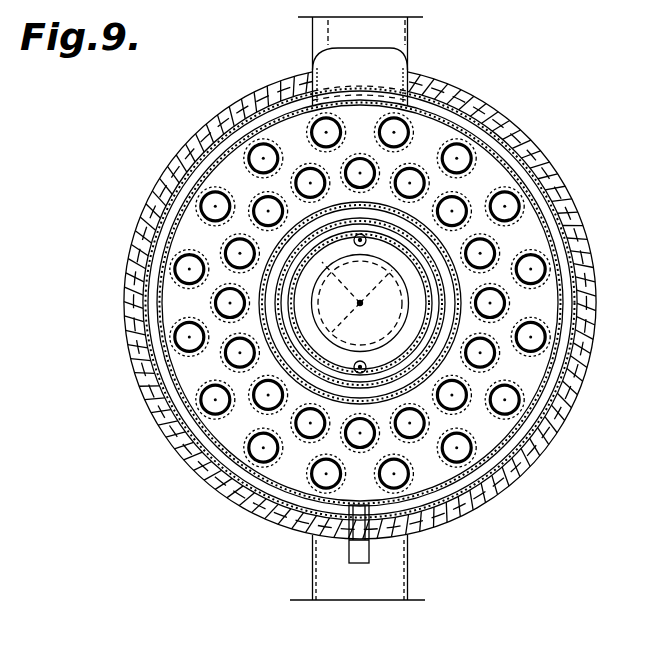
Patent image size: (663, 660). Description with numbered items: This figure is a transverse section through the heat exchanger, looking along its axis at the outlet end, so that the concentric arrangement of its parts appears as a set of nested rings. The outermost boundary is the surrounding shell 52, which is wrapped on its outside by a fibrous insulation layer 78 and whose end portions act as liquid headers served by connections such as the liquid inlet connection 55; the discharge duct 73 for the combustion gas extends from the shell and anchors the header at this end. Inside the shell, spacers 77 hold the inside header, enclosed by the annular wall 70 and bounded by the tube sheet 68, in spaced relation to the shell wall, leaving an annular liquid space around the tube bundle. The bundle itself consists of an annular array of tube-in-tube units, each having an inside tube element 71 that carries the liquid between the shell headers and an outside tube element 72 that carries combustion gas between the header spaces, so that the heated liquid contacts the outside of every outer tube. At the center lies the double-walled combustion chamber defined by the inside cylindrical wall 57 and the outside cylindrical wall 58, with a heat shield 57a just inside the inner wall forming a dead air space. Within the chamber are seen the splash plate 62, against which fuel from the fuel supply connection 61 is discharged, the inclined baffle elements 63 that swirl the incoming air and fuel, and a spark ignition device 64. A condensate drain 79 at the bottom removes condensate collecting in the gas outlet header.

The shell 52 is at (160, 350).
The liquid inlet connection 55 is at (410, 571).
The inside cylindrical wall 57 is at (289, 271).
The heat shield 57a is at (293, 343).
The outside cylindrical wall 58 is at (298, 395).
The fuel supply connection 61 is at (354, 318).
The splash plate 62 is at (392, 305).
The baffle elements 63 is at (360, 303).
The spark ignition device 64 is at (366, 242).
The tube sheet 68 is at (433, 480).
The annular wall 70 is at (163, 278).
The inside tube elements 71 is at (262, 157).
The outside tube elements 72 is at (467, 198).
The discharge duct 73 is at (412, 43).
The spacers 77 is at (213, 157).
The fibrous insulation layer 78 is at (238, 487).
The condensate drain 79 is at (351, 561).